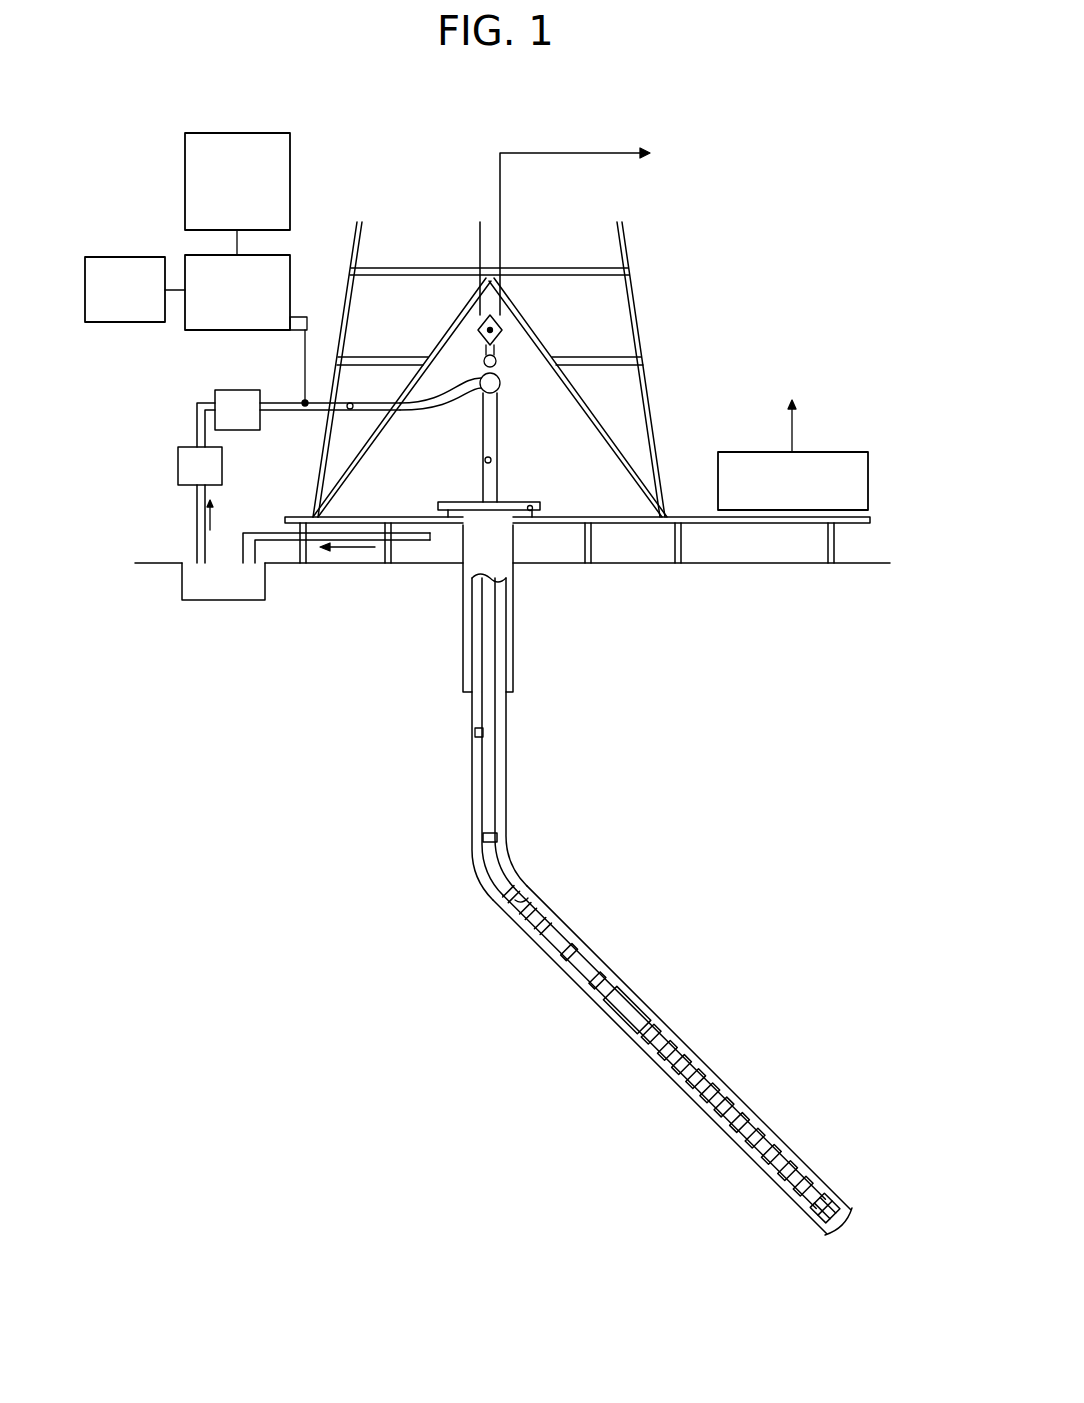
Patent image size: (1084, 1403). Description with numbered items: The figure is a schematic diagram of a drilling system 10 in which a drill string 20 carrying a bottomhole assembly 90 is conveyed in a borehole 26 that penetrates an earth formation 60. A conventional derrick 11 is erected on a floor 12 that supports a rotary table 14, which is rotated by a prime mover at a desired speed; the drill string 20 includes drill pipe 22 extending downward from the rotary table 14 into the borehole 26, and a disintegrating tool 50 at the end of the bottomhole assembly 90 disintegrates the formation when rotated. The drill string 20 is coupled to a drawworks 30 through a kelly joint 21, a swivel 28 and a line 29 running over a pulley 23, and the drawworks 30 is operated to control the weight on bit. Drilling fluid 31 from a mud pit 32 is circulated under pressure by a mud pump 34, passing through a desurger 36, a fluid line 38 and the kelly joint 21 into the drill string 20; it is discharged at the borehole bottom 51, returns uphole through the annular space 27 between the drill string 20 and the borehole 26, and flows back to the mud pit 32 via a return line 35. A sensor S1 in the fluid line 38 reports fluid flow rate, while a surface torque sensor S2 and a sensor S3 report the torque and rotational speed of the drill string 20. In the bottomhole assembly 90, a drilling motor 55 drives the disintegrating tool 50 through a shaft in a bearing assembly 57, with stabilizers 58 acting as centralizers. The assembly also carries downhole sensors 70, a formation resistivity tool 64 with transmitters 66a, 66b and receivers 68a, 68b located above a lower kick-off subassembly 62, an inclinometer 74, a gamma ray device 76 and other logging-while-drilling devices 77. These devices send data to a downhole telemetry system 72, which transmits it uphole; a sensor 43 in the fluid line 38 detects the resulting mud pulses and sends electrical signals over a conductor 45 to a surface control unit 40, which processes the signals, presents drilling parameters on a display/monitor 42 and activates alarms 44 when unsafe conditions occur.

The drilling system 10 is at (404, 172).
The derrick 11 is at (648, 368).
The floor 12 is at (668, 515).
The rotary table 14 is at (508, 500).
The drill string 20 is at (507, 700).
The kelly joint 21 is at (499, 445).
The drill pipe 22 is at (482, 760).
The pulley 23 is at (496, 370).
The borehole 26 is at (508, 860).
The annular space 27 is at (520, 898).
The swivel 28 is at (470, 388).
The line 29 is at (502, 250).
The drawworks 30 is at (855, 452).
The drilling fluid 31 is at (190, 600).
The mud pit 32 is at (250, 595).
The mud pump 34 is at (178, 462).
The return line 35 is at (430, 542).
The desurger 36 is at (225, 390).
The fluid line 38 is at (305, 412).
The surface control unit 40 is at (200, 255).
The display/monitor 42 is at (240, 133).
The sensor 43 is at (302, 398).
The alarms 44 is at (145, 322).
The conductor 45 is at (300, 315).
The disintegrating tool 50 is at (835, 1205).
The borehole bottom 51 is at (820, 1245).
The drilling motor 55 is at (636, 994).
The bearing assembly 57 is at (770, 1174).
The stabilizers 58 is at (660, 1032).
The earth formation 60 is at (330, 941).
The lower kick-off subassembly 62 is at (775, 1140).
The formation resistivity tool 64 is at (700, 1110).
The transmitter 66a is at (668, 1068).
The transmitter 66b is at (718, 1130).
The receiver 68a is at (690, 1092).
The receiver 68b is at (700, 1090).
The downhole sensors 70 is at (530, 943).
The downhole telemetry system 72 is at (483, 835).
The inclinometer 74 is at (722, 1098).
The gamma ray device 76 is at (752, 1110).
The logging-while-drilling devices 77 is at (578, 985).
The bottomhole assembly 90 is at (604, 958).
The sensor S1 is at (352, 400).
The surface torque sensor S2 is at (482, 460).
The sensor S3 is at (533, 504).